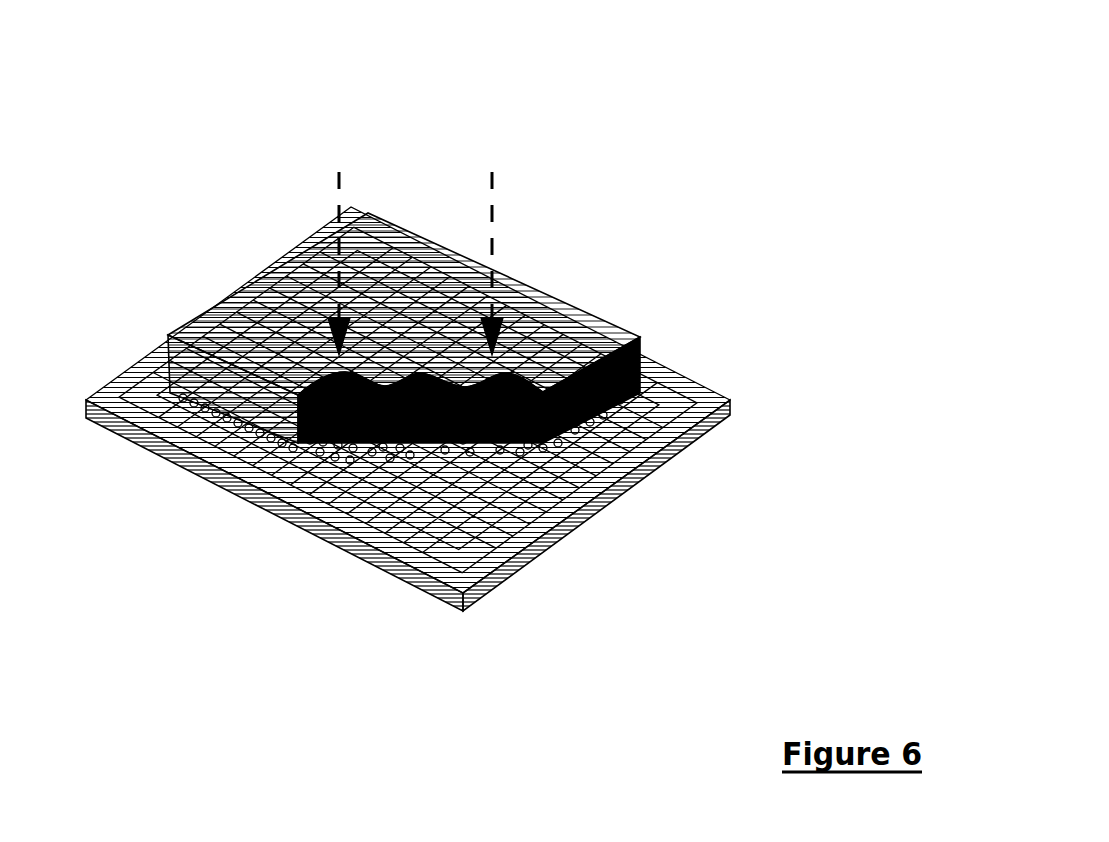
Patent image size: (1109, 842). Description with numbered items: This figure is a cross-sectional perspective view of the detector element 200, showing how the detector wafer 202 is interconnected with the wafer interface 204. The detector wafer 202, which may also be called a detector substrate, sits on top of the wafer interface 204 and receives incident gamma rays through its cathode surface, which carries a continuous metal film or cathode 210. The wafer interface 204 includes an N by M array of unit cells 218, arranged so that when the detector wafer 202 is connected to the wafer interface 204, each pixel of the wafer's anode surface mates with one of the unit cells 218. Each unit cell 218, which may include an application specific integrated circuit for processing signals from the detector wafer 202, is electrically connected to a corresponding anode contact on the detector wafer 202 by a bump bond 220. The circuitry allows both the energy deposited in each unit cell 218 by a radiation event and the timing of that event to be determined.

The detector element 200 is at (428, 320).
The detector wafer 202 is at (404, 324).
The wafer interface 204 is at (240, 500).
The cathode 210 is at (430, 311).
The unit cells 218 is at (607, 356).
The bump bond 220 is at (170, 378).